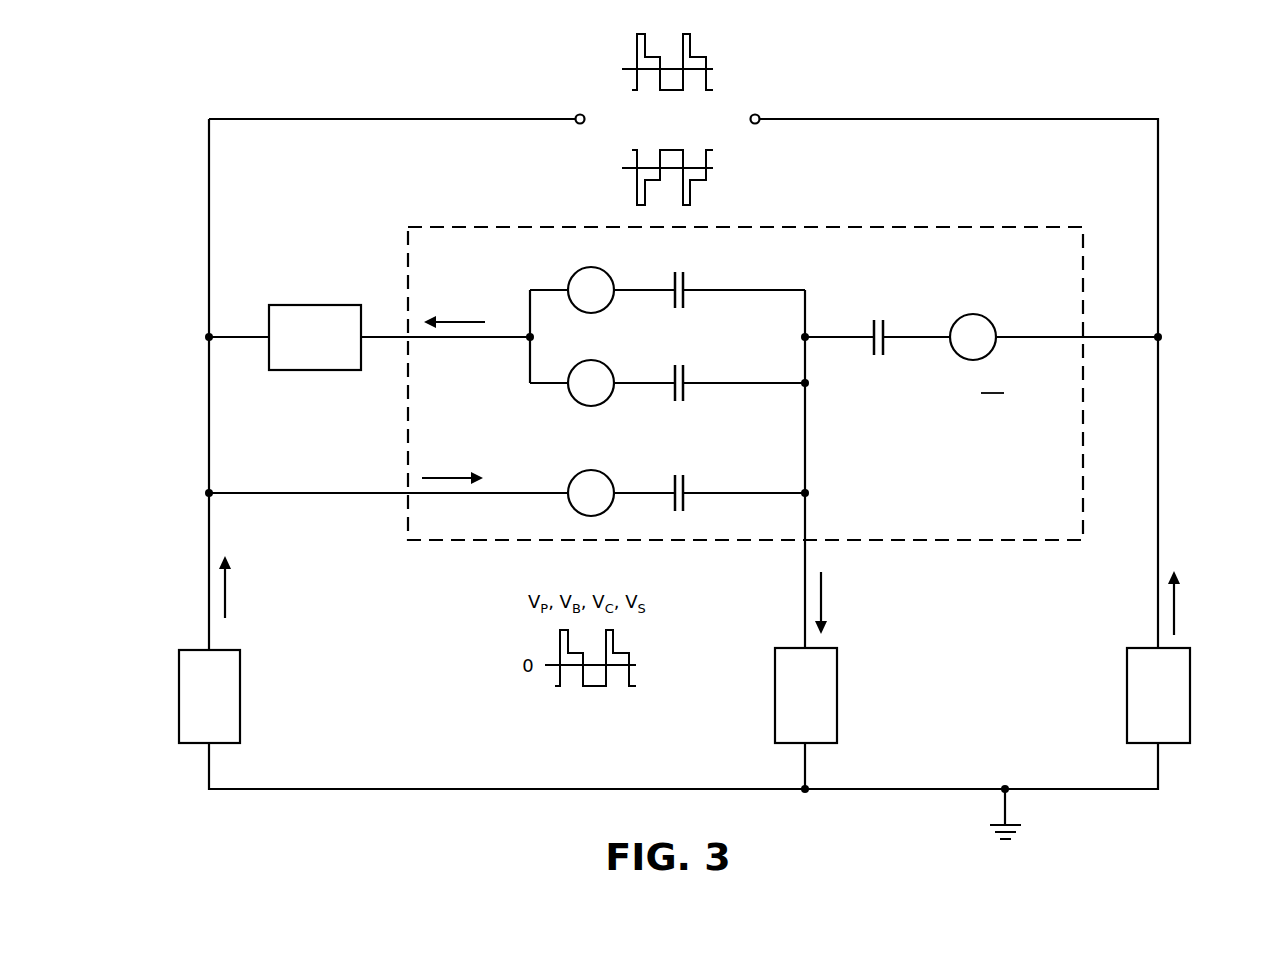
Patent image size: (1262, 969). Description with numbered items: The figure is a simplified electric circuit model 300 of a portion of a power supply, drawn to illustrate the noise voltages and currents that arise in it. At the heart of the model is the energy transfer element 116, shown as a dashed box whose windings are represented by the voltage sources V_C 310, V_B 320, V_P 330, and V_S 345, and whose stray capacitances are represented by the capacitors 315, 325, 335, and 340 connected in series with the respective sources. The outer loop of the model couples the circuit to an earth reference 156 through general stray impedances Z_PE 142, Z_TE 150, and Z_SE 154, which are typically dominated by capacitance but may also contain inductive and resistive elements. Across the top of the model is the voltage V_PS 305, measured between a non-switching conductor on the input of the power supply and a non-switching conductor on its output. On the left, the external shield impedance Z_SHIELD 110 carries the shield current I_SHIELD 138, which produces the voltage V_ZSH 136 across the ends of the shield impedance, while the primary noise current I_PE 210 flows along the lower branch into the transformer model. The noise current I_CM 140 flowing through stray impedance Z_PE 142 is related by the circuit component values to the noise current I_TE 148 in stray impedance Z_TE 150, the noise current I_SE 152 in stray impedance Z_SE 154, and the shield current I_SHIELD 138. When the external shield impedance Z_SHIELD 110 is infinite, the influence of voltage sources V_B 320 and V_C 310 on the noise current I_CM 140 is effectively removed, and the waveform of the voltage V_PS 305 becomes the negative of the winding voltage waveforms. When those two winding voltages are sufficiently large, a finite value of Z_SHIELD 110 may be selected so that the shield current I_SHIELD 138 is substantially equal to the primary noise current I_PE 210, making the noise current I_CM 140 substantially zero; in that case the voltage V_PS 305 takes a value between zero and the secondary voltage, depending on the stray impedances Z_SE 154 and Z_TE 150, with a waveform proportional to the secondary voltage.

The electric circuit model 300 is at (683, 428).
The voltage V_PS 305 is at (637, 120).
The energy transfer element 116 is at (560, 224).
The external shield impedance Z_SHIELD 110 is at (315, 337).
The voltage V_ZSH 136 is at (334, 272).
The shield current I_SHIELD 138 is at (458, 285).
The primary noise current I_PE 210 is at (472, 462).
The voltage source V_C 310 is at (608, 269).
The capacitor 315 is at (690, 276).
The voltage source V_B 320 is at (608, 362).
The capacitor 325 is at (690, 370).
The voltage source V_P 330 is at (608, 472).
The capacitor 335 is at (690, 480).
The capacitor 340 is at (889, 322).
The voltage source V_S 345 is at (993, 315).
The noise current I_CM 140 is at (244, 578).
The stray impedance Z_PE 142 is at (209, 696).
The noise current I_TE 148 is at (833, 601).
The stray impedance Z_TE 150 is at (806, 695).
The noise current I_SE 152 is at (1188, 594).
The stray impedance Z_SE 154 is at (1158, 695).
The earth reference 156 is at (982, 836).